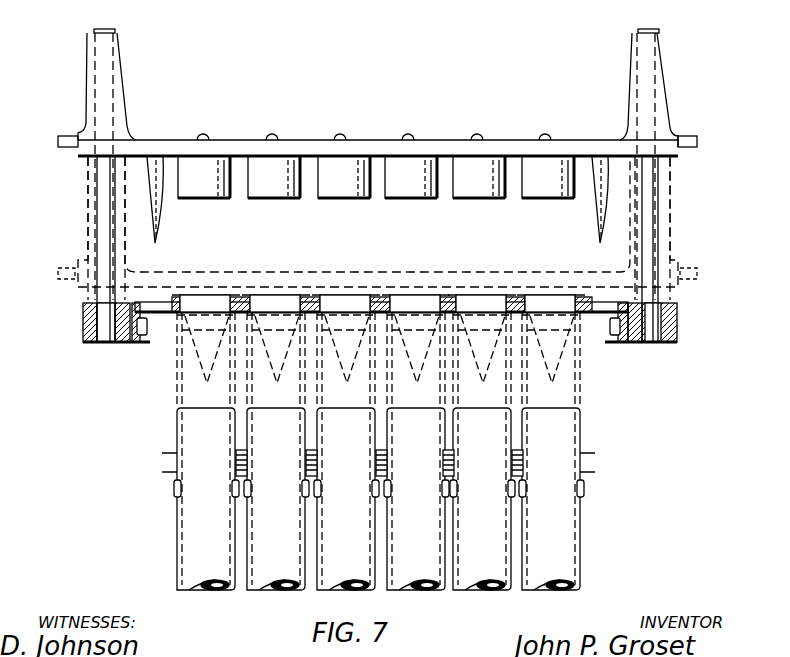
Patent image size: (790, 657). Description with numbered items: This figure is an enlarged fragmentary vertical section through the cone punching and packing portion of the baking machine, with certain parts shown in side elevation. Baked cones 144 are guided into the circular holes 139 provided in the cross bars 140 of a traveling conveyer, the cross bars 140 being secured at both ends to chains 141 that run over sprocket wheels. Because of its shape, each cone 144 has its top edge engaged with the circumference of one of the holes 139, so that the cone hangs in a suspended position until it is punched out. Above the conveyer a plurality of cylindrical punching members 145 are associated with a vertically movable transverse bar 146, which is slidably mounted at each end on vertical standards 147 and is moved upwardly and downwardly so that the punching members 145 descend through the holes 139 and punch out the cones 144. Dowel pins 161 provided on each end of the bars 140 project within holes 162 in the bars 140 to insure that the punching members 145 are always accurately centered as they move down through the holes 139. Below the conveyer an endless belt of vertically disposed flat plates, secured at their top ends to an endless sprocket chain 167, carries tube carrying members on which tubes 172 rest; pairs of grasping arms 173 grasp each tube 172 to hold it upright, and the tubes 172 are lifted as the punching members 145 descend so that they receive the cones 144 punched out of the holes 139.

The circular holes 139 is at (340, 300).
The cross bars 140 is at (172, 298).
The chains 141 is at (152, 333).
The cones 144 is at (548, 352).
The cylindrical punching members 145 is at (236, 142).
The transverse bar 146 is at (158, 152).
The vertical standards 147 is at (100, 203).
The dowel pins 161 is at (150, 218).
The holes 162 is at (150, 302).
The endless sprocket chain 167 is at (307, 460).
The tube 172 is at (475, 538).
The grasping arms 173 is at (417, 468).